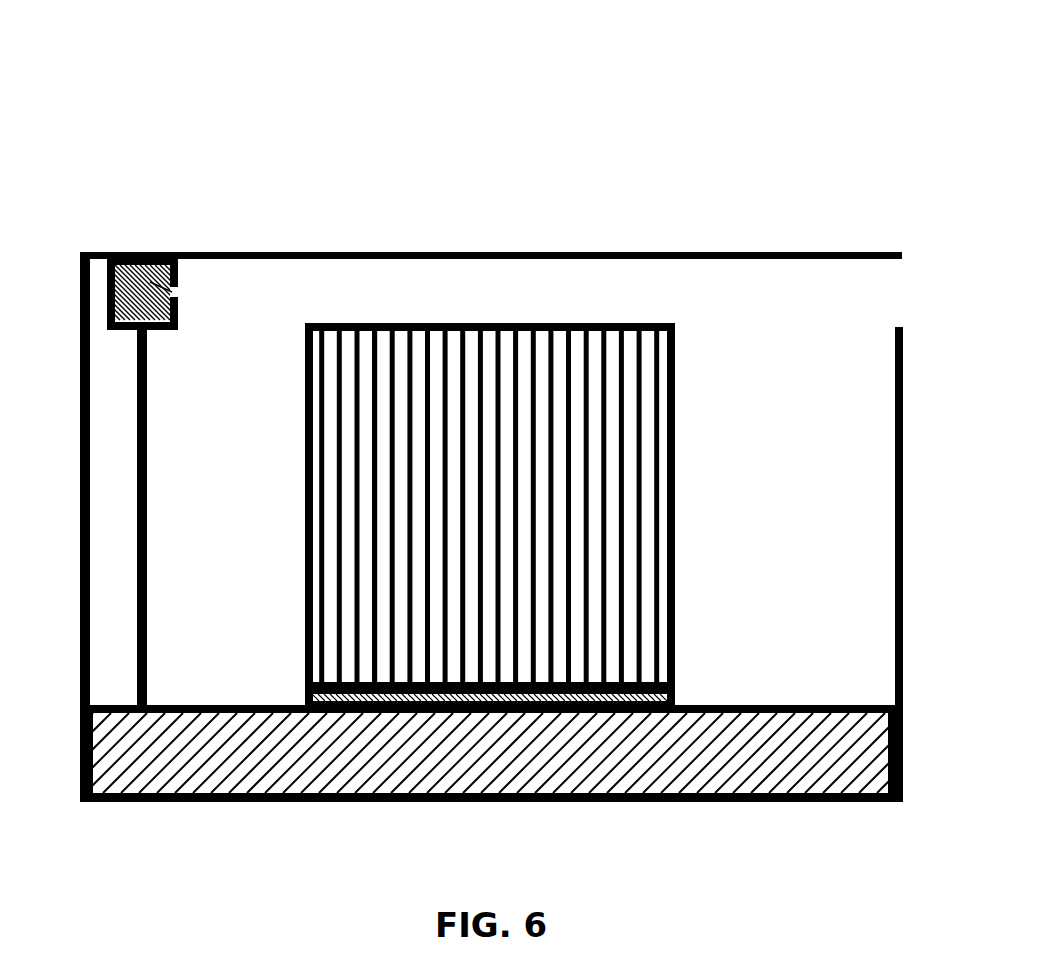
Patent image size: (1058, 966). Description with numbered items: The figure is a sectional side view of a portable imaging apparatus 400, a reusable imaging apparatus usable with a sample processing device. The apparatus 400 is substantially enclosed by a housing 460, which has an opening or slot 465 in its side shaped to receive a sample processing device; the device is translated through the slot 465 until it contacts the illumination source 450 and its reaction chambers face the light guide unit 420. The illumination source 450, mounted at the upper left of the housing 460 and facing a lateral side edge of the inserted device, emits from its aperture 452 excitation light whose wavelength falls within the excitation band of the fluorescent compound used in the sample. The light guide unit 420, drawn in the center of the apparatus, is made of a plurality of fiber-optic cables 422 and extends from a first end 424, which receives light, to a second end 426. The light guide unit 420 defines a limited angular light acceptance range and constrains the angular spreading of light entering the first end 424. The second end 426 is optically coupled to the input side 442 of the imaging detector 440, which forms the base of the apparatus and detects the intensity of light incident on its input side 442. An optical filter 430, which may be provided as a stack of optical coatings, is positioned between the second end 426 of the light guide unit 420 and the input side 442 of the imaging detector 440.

The portable imaging apparatus 400 is at (305, 92).
The light guide unit 420 is at (540, 518).
The fiber-optic cables 422 is at (642, 603).
The first end 424 is at (372, 340).
The second end 426 is at (619, 672).
The optical filter 430 is at (307, 703).
The imaging detector 440 is at (413, 805).
The input side 442 is at (201, 688).
The illumination source 450 is at (132, 424).
The aperture 452 is at (141, 262).
The housing 460 is at (690, 250).
The slot 465 is at (887, 275).